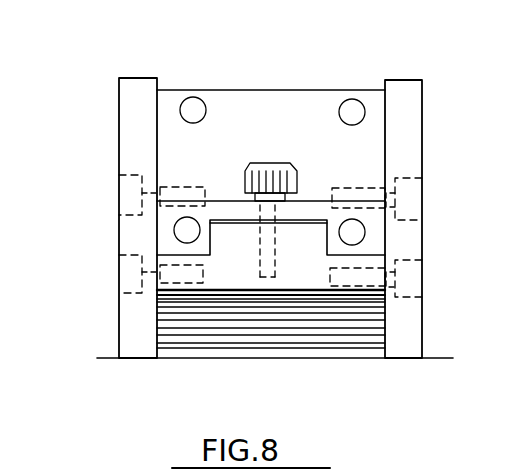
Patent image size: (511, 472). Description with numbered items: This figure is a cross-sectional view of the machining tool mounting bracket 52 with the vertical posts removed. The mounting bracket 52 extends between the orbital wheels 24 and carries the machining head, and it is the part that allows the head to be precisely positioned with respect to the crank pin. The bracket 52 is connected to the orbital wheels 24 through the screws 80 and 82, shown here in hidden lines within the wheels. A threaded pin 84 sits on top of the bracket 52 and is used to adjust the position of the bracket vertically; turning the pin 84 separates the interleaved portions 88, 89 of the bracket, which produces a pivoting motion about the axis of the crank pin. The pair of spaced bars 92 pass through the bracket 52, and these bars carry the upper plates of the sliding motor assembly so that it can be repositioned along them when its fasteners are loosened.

The orbital wheels 24 is at (143, 86).
The machining tool mounting bracket 52 is at (330, 60).
The threaded pin 84 is at (263, 164).
The screw 82 is at (417, 190).
The interleaved portion 89 is at (378, 229).
The spaced bars 92 is at (182, 229).
The screw 80 is at (408, 272).
The interleaved portion 88 is at (305, 272).